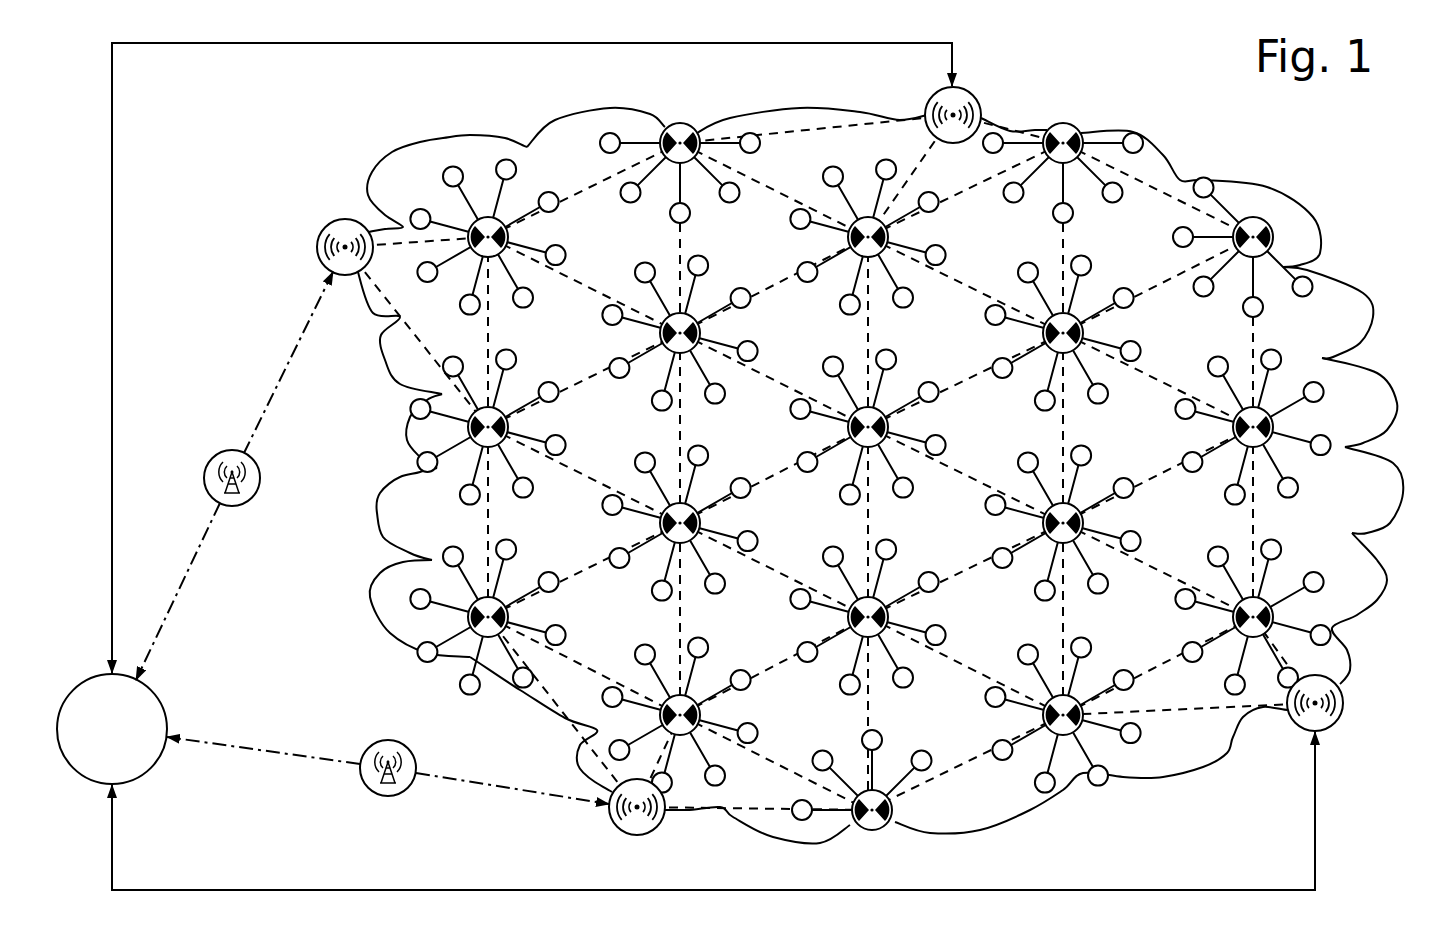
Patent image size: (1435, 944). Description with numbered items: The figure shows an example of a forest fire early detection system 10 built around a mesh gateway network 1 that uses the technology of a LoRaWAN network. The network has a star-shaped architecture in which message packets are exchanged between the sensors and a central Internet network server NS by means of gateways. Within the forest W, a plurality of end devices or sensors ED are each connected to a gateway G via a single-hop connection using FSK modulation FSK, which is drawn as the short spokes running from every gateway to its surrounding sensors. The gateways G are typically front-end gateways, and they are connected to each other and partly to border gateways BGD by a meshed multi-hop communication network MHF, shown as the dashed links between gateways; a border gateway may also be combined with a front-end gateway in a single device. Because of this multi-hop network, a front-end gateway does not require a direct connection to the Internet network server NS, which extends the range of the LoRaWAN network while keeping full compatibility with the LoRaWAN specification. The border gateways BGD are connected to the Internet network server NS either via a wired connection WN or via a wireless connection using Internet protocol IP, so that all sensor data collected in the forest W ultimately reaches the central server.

The forest fire early detection system 10 is at (1043, 88).
The mesh gateway network 1 is at (830, 462).
The end devices/sensors ED is at (508, 158).
The gateway G is at (473, 636).
The FSK modulation FSK is at (1093, 755).
The forest W is at (380, 521).
The border gateway device BGD is at (318, 259).
The multi-hop communication network MHF is at (420, 344).
The Internet Protocol IP is at (361, 776).
The Internet network server NS is at (112, 729).
The wired connection WN is at (113, 143).